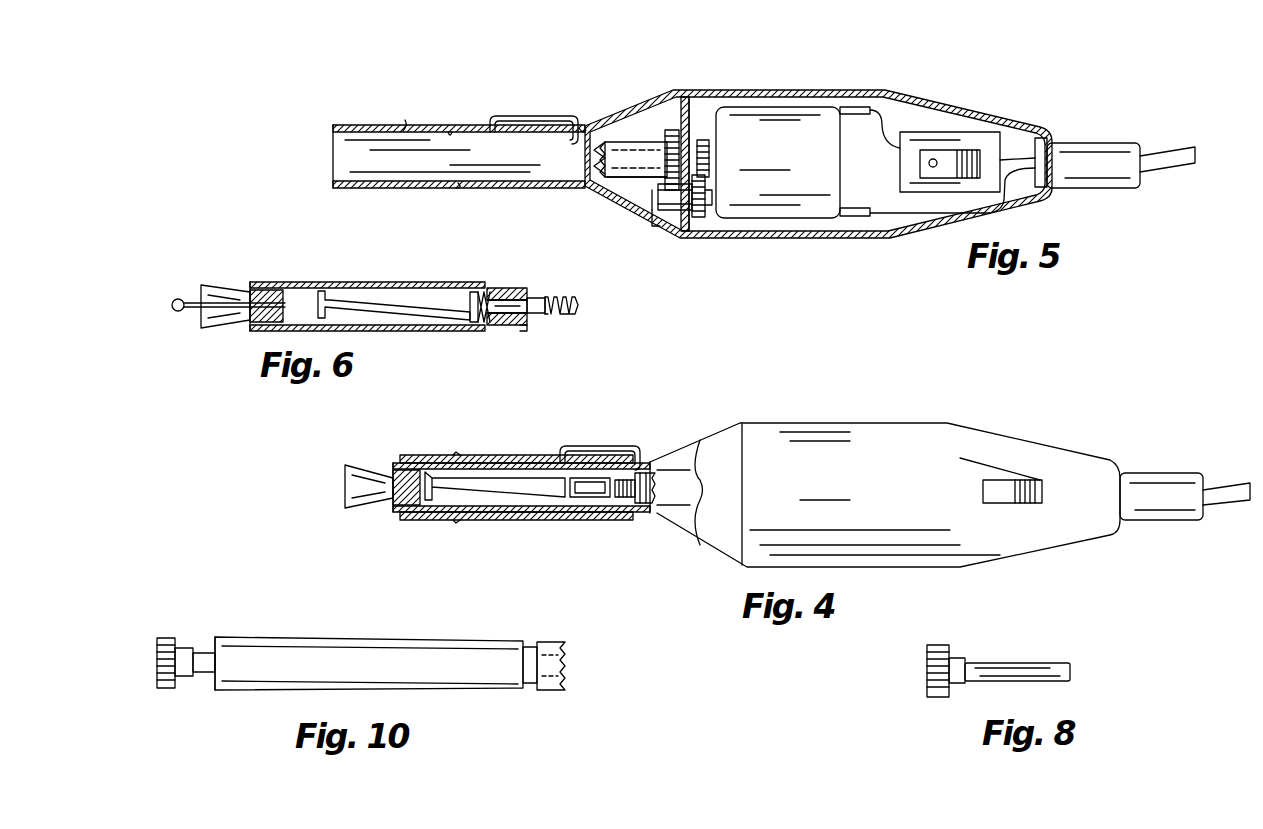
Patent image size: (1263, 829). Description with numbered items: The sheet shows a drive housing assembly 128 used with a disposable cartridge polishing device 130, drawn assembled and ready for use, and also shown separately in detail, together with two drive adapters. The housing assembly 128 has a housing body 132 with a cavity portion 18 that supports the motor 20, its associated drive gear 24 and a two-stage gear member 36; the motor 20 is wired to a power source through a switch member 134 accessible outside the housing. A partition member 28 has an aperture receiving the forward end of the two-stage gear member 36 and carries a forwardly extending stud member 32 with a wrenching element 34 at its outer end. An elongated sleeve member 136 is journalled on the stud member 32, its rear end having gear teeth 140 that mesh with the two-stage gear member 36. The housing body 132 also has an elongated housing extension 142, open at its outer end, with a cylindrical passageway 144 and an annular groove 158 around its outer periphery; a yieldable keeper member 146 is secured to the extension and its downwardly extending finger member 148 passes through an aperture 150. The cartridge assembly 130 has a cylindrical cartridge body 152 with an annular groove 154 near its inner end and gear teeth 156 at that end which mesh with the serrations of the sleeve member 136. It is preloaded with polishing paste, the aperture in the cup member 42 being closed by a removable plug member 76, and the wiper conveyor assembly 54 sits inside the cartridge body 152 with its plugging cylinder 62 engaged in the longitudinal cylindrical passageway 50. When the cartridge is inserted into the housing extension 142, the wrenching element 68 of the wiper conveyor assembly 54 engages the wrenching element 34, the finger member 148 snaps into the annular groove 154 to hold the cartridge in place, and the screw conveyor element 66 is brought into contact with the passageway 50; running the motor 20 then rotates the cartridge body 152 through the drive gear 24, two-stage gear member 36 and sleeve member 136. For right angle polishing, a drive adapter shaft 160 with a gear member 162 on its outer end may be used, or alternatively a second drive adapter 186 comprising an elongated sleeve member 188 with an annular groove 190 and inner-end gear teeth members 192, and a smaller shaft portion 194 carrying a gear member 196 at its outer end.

In FIG. 5, the cavity portion 18 is at (705, 105).
In FIG. 5, the motor 20 is at (787, 110).
In FIG. 5, the drive gear 24 is at (712, 153).
In FIG. 5, the partition member 28 is at (687, 98).
In FIG. 5, the stud member 32 is at (606, 150).
In FIG. 4, the stud member 32 is at (652, 462).
In FIG. 5, the wrenching element 34 is at (593, 160).
In FIG. 5, the two-stage gear member 36 is at (700, 215).
In FIG. 6, the cup member 42 is at (217, 286).
In FIG. 4, the cup member 42 is at (355, 468).
In FIG. 6, the longitudinal cylindrical passageway 50 is at (483, 288).
In FIG. 6, the wiper conveyor assembly 54 is at (393, 300).
In FIG. 4, the wiper conveyor assembly 54 is at (535, 487).
In FIG. 6, the plugging cylinder 62 is at (498, 330).
In FIG. 4, the plugging cylinder 62 is at (593, 497).
In FIG. 6, the screw conveyor element 66 is at (550, 318).
In FIG. 4, the screw conveyor element 66 is at (630, 505).
In FIG. 6, the wrenching element 68 is at (570, 300).
In FIG. 4, the wrenching element 68 is at (650, 505).
In FIG. 6, the removable plug member 76 is at (183, 312).
In FIG. 5, the drive housing assembly 128 is at (885, 90).
In FIG. 4, the drive housing assembly 128 is at (803, 417).
In FIG. 6, the cartridge polishing device 130 is at (283, 262).
In FIG. 4, the cartridge polishing device 130 is at (388, 441).
In FIG. 5, the housing body 132 is at (663, 222).
In FIG. 5, the switch member 134 is at (955, 150).
In FIG. 4, the switch member 134 is at (1022, 505).
In FIG. 5, the sleeve member 136 is at (628, 178).
In FIG. 4, the sleeve member 136 is at (690, 482).
In FIG. 5, the gear teeth 140 is at (670, 130).
In FIG. 5, the housing extension 142 is at (467, 188).
In FIG. 5, the cylindrical passageway 144 is at (450, 125).
In FIG. 5, the keeper member 146 is at (522, 116).
In FIG. 4, the keeper member 146 is at (600, 446).
In FIG. 5, the finger member 148 is at (585, 125).
In FIG. 5, the aperture 150 is at (408, 124).
In FIG. 6, the cartridge body 152 is at (333, 282).
In FIG. 6, the annular groove 154 is at (505, 283).
In FIG. 6, the gear teeth 156 is at (525, 330).
In FIG. 4, the annular groove 158 is at (470, 457).
In FIG. 8, the drive adapter shaft 160 is at (1013, 668).
In FIG. 8, the gear member 162 is at (930, 672).
In FIG. 10, the drive adapter 186 is at (330, 637).
In FIG. 10, the sleeve member 188 is at (425, 638).
In FIG. 10, the annular groove 190 is at (530, 645).
In FIG. 10, the gear teeth members 192 is at (570, 645).
In FIG. 10, the smaller shaft portion 194 is at (203, 652).
In FIG. 10, the gear member 196 is at (163, 638).